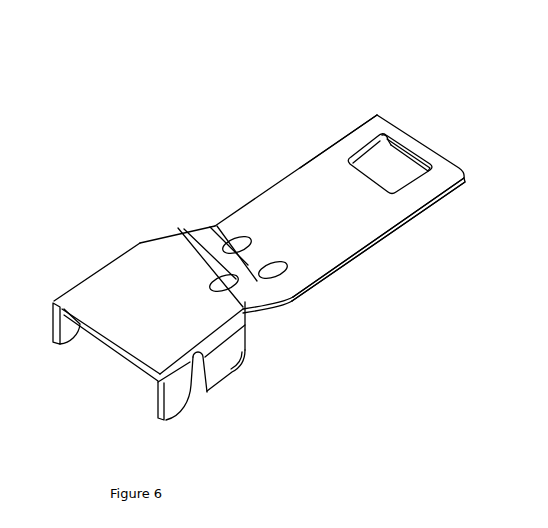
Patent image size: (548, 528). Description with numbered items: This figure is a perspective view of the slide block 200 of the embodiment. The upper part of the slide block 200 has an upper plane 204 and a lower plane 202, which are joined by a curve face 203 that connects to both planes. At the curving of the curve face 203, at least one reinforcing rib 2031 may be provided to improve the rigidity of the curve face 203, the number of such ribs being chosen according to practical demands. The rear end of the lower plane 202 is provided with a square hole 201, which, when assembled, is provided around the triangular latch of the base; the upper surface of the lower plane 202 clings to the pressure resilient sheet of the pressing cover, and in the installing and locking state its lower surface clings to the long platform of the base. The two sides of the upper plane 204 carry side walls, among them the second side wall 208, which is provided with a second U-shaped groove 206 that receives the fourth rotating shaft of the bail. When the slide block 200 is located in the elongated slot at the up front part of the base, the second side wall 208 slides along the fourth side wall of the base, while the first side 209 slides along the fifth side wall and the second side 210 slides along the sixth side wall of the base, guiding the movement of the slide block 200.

The slide block 200 is at (412, 324).
The square hole 201 is at (386, 167).
The lower plane 202 is at (289, 207).
The curve face 203 is at (178, 228).
The reinforcing rib 2031 is at (298, 300).
The upper plane 204 is at (145, 308).
The second U-shaped groove 206 is at (198, 392).
The second side wall 208 is at (227, 362).
The first side 209 is at (299, 166).
The second side 210 is at (382, 243).